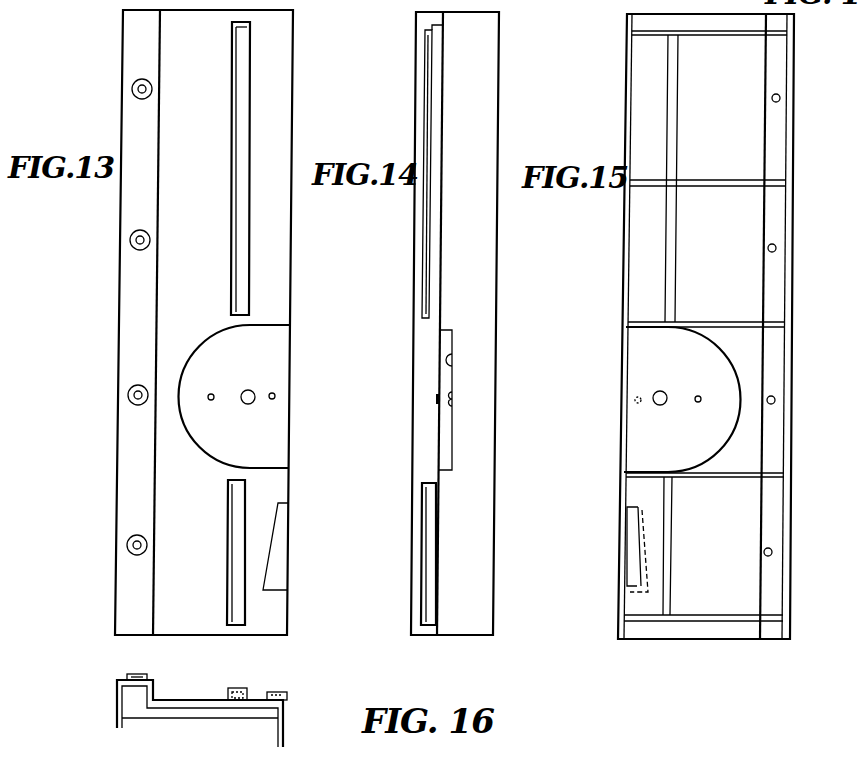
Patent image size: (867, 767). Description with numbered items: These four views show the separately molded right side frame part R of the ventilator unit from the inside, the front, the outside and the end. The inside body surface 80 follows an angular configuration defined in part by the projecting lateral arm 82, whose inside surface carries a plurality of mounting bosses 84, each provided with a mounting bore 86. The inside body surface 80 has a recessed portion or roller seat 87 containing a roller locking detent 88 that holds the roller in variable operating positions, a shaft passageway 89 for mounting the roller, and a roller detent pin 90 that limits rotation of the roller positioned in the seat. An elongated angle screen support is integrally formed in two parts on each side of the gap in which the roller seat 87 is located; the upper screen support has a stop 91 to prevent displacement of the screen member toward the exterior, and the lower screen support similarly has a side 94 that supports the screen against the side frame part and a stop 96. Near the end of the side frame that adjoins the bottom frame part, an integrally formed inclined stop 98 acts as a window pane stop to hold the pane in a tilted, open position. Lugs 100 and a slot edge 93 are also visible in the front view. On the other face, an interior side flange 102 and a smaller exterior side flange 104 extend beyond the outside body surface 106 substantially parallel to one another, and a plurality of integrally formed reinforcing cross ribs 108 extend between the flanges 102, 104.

In FIG. 13, the right side frame part R is at (181, 212).
In FIG. 16, the inside body surface 80 is at (205, 673).
In FIG. 14, the lateral arm 82 is at (423, 362).
In FIG. 15, the lateral arm 82 is at (778, 132).
In FIG. 16, the lateral arm 82 is at (117, 672).
In FIG. 16, the mounting boss 84 is at (133, 673).
In FIG. 13, the mounting bore 86 is at (134, 80).
In FIG. 15, the mounting bore 86 is at (781, 99).
In FIG. 13, the roller seat 87 is at (263, 336).
In FIG. 14, the roller seat 87 is at (452, 362).
In FIG. 15, the roller seat 87 is at (645, 445).
In FIG. 13, the roller locking detent 88 is at (276, 400).
In FIG. 15, the roller locking detent 88 is at (634, 406).
In FIG. 13, the shaft passageway 89 is at (255, 392).
In FIG. 15, the shaft passageway 89 is at (661, 407).
In FIG. 13, the roller detent pin 90 is at (219, 374).
In FIG. 15, the roller detent pin 90 is at (702, 398).
In FIG. 13, the stop 91 is at (233, 70).
In FIG. 14, the stop 91 is at (427, 64).
In FIG. 13, the slot edge 93 is at (246, 74).
In FIG. 14, the slot edge 93 is at (437, 66).
In FIG. 13, the side 94 is at (246, 488).
In FIG. 14, the side 94 is at (432, 490).
In FIG. 15, the side 94 is at (667, 573).
In FIG. 16, the side 94 is at (245, 688).
In FIG. 13, the stop 96 is at (228, 545).
In FIG. 14, the stop 96 is at (422, 565).
In FIG. 16, the stop 96 is at (258, 662).
In FIG. 13, the inclined stop 98 is at (278, 558).
In FIG. 14, the inclined stop 98 is at (437, 572).
In FIG. 15, the inclined stop 98 is at (628, 565).
In FIG. 16, the inclined stop 98 is at (287, 692).
In FIG. 14, the lugs 100 is at (453, 406).
In FIG. 14, the interior side flange 102 is at (485, 458).
In FIG. 15, the interior side flange 102 is at (626, 356).
In FIG. 16, the interior side flange 102 is at (283, 730).
In FIG. 15, the exterior side flange 104 is at (787, 310).
In FIG. 16, the exterior side flange 104 is at (117, 708).
In FIG. 15, the outside body surface 106 is at (738, 88).
In FIG. 16, the outside body surface 106 is at (168, 710).
In FIG. 15, the reinforcing cross rib 108 is at (724, 36).
In FIG. 16, the reinforcing cross rib 108 is at (240, 716).